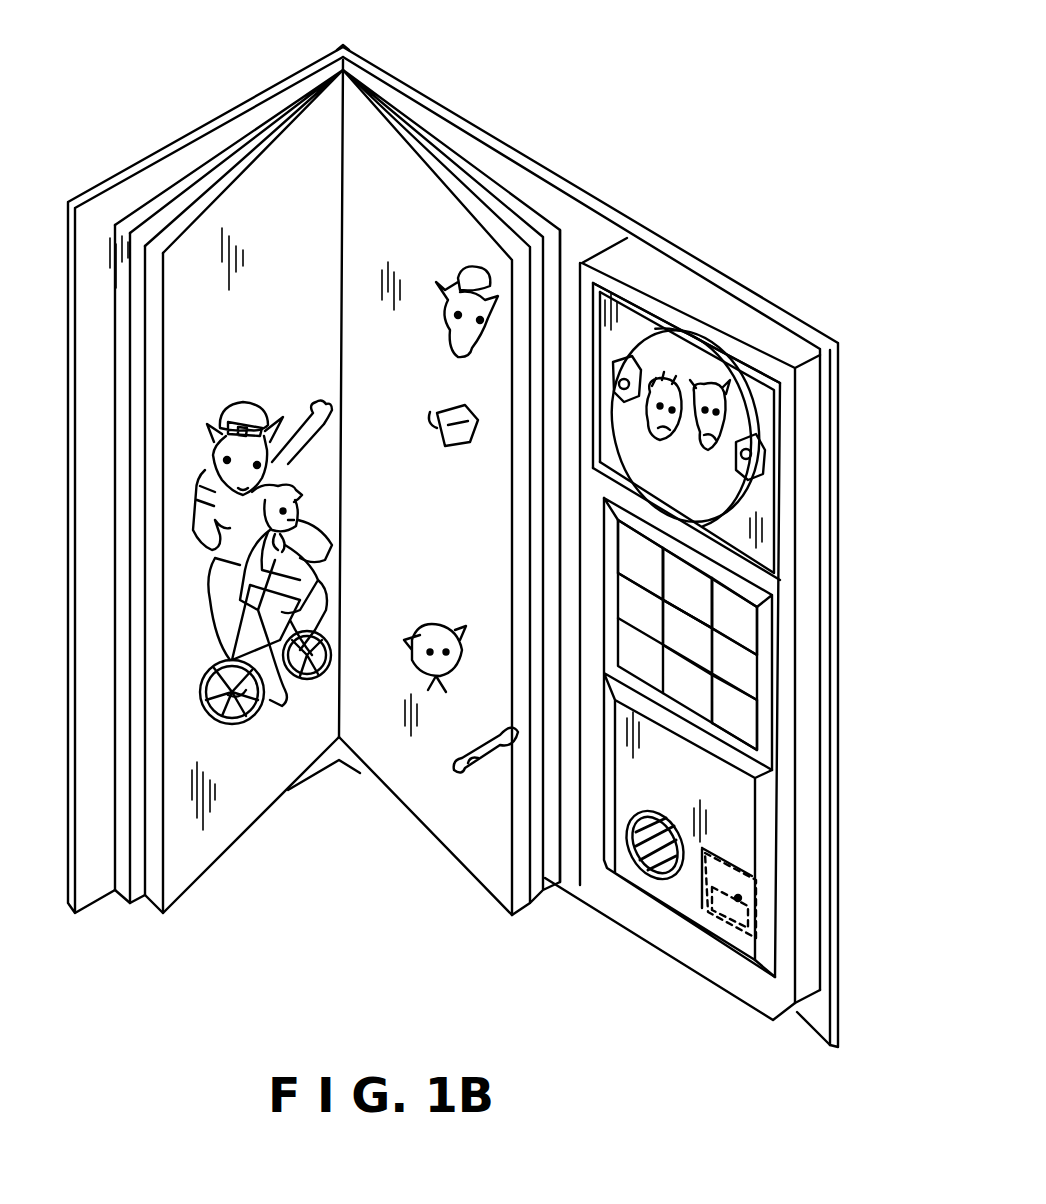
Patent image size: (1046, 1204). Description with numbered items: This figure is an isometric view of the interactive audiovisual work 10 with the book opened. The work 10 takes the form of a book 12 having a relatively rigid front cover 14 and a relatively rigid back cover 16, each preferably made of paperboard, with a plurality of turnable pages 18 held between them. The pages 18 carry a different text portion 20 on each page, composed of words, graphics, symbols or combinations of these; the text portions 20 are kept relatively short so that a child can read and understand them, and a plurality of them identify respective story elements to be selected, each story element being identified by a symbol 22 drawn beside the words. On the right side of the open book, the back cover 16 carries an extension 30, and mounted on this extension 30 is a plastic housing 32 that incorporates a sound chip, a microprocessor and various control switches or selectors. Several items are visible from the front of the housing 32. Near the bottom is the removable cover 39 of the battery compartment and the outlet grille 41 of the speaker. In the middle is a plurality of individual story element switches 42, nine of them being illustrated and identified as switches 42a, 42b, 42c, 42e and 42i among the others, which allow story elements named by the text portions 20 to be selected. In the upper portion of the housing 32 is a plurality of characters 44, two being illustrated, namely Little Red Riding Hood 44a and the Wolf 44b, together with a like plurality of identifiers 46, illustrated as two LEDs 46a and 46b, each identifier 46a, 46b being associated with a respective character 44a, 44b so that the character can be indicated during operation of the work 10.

The interactive audiovisual work 10 is at (286, 50).
The book 12 is at (372, 148).
The front cover 14 is at (163, 150).
The back cover 16 is at (440, 103).
The turnable pages 18 is at (266, 175).
The text portion 20 is at (412, 218).
The symbol 22 is at (487, 262).
The extension 30 is at (817, 1012).
The housing 32 is at (570, 880).
The removable cover 39 is at (732, 858).
The outlet grille 41 is at (660, 810).
The story element switches 42 is at (742, 684).
The story element switch 42a is at (640, 566).
The story element switch 42b is at (692, 600).
The story element switch 42c is at (740, 628).
The story element switch 42e is at (694, 650).
The story element switch 42i is at (744, 732).
The characters 44 is at (706, 374).
The Little Red Riding Hood 44a is at (688, 376).
The Wolf 44b is at (731, 397).
The identifiers 46 is at (620, 363).
The LED 46a is at (675, 380).
The LED 46b is at (764, 458).